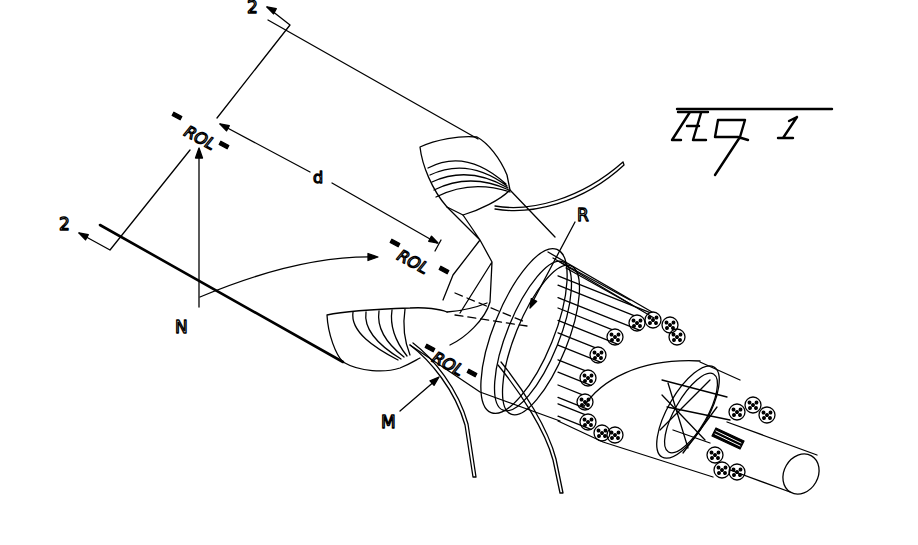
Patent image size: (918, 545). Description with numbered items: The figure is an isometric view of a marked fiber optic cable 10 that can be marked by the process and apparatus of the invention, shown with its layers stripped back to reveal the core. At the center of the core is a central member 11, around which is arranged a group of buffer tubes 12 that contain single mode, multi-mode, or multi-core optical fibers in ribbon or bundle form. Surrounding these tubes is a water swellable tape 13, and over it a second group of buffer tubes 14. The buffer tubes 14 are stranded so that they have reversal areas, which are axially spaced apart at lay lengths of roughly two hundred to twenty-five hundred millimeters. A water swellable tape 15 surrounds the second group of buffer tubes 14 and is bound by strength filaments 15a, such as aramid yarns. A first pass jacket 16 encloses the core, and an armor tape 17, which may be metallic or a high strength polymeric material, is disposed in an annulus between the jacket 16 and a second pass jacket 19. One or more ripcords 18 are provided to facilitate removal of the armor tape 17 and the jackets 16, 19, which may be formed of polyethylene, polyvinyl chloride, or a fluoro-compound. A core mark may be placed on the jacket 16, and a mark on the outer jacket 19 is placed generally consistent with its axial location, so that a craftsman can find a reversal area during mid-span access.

The fiber optic cable 10 is at (378, 73).
The central member 11 is at (794, 445).
The buffer tubes 12 is at (727, 380).
The water swellable tape 13 is at (669, 349).
The second group of buffer tubes 14 is at (640, 298).
The water swellable tape 15 is at (597, 270).
The strength filaments 15a is at (605, 268).
The first pass jacket 16 is at (568, 243).
The armor tape 17 is at (512, 193).
The ripcords 18 is at (600, 167).
The second pass jacket 19 is at (432, 118).